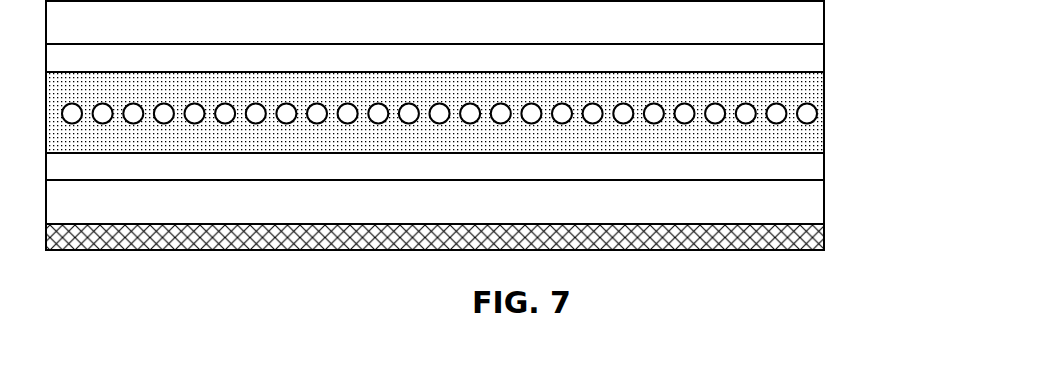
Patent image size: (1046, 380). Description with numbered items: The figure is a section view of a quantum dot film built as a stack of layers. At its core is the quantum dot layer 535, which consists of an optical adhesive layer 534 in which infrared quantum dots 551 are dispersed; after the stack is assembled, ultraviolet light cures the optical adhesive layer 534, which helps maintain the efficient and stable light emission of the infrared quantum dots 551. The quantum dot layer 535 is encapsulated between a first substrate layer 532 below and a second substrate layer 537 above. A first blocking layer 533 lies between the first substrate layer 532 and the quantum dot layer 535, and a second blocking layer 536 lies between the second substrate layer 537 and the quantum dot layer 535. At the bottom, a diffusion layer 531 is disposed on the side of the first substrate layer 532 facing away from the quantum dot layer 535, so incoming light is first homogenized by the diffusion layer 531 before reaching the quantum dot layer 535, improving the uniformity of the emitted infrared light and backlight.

The second substrate layer 537 is at (824, 22).
The second blocking layer 536 is at (824, 60).
The quantum dot layer 535 is at (885, 75).
The infrared quantum dots 551 is at (813, 107).
The optical adhesive layer 534 is at (818, 138).
The first blocking layer 533 is at (824, 165).
The first substrate layer 532 is at (824, 198).
The diffusion layer 531 is at (824, 236).